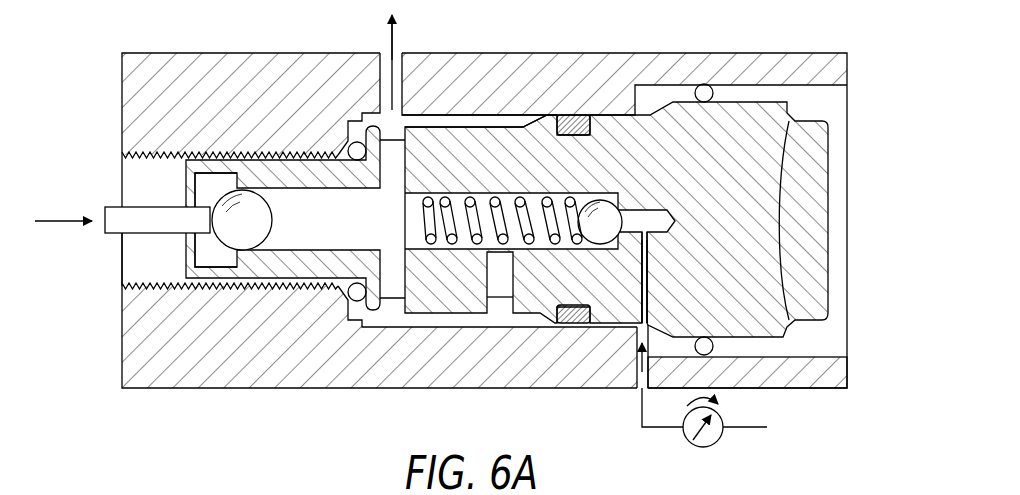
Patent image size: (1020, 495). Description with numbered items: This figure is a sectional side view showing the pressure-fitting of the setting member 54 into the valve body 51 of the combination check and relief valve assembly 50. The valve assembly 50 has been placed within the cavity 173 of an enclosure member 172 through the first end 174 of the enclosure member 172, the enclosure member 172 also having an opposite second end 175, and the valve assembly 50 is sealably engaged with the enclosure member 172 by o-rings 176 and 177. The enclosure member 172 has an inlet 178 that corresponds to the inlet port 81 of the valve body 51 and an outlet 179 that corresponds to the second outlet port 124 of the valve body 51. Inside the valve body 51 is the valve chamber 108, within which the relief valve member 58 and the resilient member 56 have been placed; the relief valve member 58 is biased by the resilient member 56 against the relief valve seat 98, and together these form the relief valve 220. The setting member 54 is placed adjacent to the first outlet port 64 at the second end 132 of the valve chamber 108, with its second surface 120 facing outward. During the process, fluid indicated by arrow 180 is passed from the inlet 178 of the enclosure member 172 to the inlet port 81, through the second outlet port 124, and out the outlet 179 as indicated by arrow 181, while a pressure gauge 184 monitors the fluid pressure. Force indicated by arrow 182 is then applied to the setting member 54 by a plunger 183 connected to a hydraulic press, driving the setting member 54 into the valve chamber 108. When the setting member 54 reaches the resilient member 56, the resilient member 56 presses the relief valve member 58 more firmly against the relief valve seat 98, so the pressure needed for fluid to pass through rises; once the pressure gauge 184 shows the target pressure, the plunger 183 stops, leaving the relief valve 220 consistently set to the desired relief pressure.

The valve assembly 50 is at (476, 116).
The valve body 51 is at (510, 116).
The setting member 54 is at (266, 190).
The resilient member 56 is at (468, 218).
The relief valve member 58 is at (606, 198).
The first outlet port 64 is at (177, 291).
The inlet port 81 is at (642, 328).
The relief valve seat 98 is at (636, 185).
The valve chamber 108 is at (315, 190).
The second surface 120 is at (217, 247).
The second outlet port 124 is at (392, 132).
The second end 132 is at (229, 147).
The enclosure member 172 is at (252, 63).
The cavity 173 is at (832, 104).
The first end 174 is at (835, 328).
The second end 175 is at (137, 275).
The o-ring 176 is at (353, 142).
The o-ring 177 is at (705, 85).
The inlet 178 is at (640, 387).
The outlet 179 is at (386, 54).
The arrow indicating fluid flow 180 is at (640, 407).
The arrow indicating fluid flow 181 is at (392, 32).
The arrow indicating applied force 182 is at (55, 214).
The plunger 183 is at (150, 220).
The pressure gauge 184 is at (720, 440).
The relief valve 220 is at (624, 185).